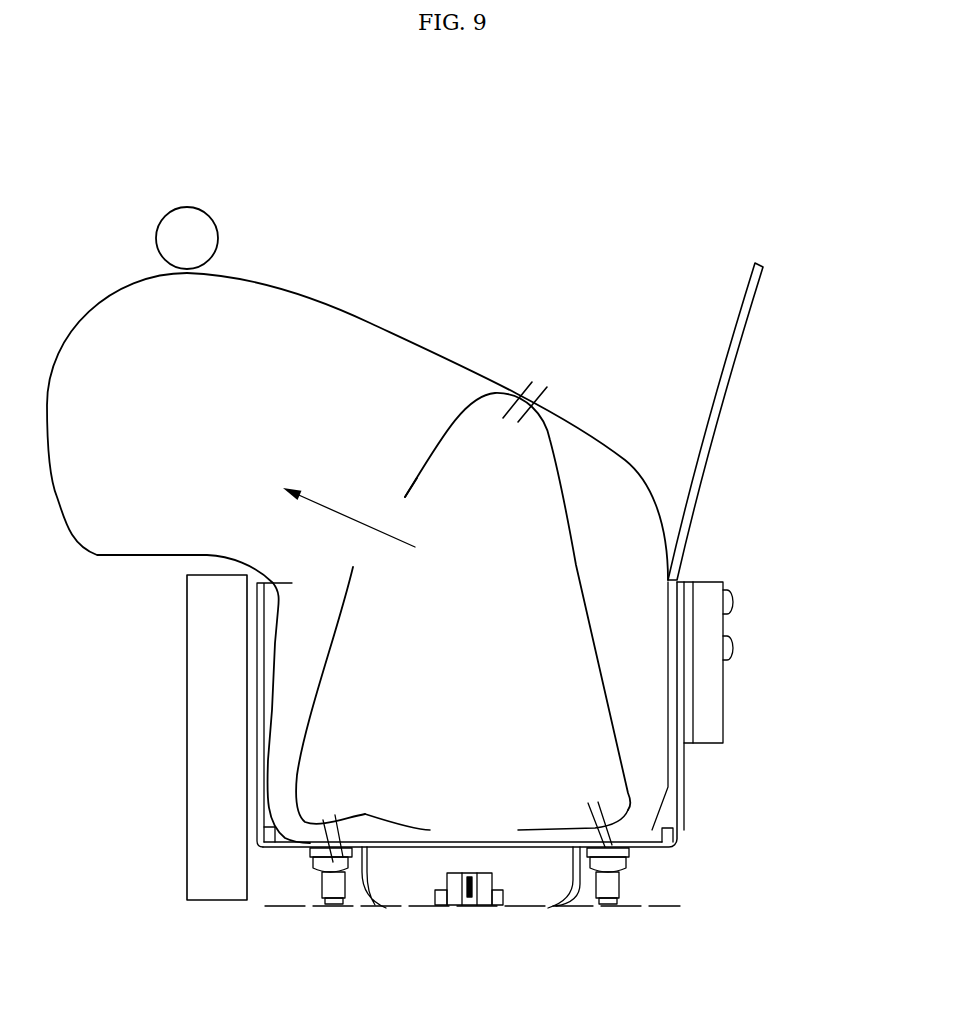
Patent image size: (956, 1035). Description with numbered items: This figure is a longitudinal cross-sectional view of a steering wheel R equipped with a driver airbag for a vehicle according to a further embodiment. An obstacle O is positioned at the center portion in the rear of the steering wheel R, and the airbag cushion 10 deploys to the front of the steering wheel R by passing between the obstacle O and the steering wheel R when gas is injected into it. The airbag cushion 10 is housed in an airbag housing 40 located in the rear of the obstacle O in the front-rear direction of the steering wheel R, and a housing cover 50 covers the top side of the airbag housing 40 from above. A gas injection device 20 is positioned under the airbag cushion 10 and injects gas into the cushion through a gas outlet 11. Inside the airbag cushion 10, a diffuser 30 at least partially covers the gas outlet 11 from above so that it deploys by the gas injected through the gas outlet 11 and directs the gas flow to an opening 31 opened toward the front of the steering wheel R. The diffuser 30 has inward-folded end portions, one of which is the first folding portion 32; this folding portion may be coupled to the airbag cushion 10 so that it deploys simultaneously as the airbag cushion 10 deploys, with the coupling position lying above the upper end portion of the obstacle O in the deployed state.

The steering wheel R is at (184, 222).
The obstacle O is at (200, 733).
The airbag cushion 10 is at (357, 315).
The gas outlet 11 is at (446, 821).
The gas injection device 20 is at (485, 907).
The diffuser 30 is at (573, 532).
The opening 31 is at (380, 518).
The first folding portion 32 is at (542, 380).
The airbag housing 40 is at (680, 850).
The housing cover 50 is at (712, 423).